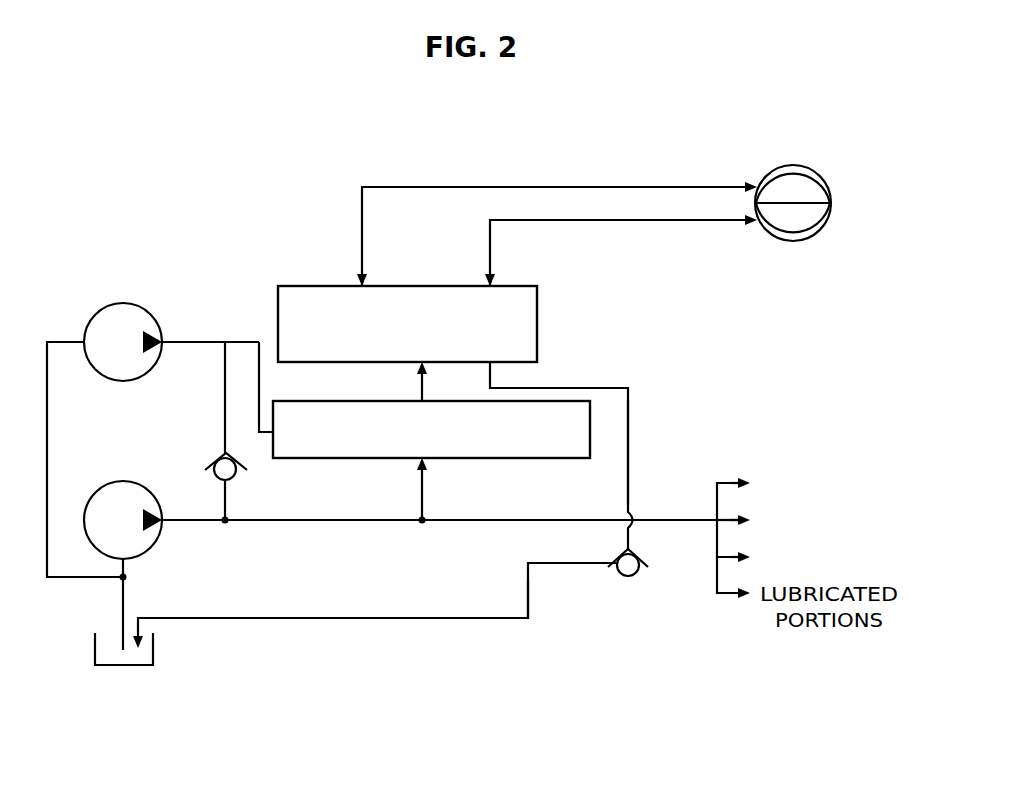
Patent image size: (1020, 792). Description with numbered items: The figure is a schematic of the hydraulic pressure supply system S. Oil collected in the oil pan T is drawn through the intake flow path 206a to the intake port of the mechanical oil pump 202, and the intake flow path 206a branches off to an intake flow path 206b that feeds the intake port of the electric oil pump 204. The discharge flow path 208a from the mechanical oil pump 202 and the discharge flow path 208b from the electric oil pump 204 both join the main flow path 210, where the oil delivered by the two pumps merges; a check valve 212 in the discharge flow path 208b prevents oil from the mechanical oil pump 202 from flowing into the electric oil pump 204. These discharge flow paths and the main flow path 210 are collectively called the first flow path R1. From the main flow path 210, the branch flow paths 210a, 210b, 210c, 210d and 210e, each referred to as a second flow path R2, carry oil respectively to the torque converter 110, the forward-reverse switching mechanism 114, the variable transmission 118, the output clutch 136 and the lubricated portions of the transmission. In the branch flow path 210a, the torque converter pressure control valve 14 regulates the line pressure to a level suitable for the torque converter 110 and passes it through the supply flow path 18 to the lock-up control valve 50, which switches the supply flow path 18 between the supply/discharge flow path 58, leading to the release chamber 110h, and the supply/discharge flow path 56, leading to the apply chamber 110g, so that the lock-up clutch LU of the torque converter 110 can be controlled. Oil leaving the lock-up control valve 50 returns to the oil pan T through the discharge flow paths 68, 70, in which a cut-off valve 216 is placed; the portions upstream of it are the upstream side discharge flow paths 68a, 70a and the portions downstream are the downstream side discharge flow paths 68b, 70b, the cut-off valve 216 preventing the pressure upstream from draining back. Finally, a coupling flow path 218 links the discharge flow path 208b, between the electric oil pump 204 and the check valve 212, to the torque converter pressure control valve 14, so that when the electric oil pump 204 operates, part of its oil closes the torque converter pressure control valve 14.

The hydraulic pressure supply system S is at (76, 156).
The mechanical oil pump 202 is at (123, 481).
The electric oil pump 204 is at (123, 303).
The intake flow path 206a is at (120, 616).
The intake flow path 206b is at (66, 338).
The discharge flow path 208a is at (182, 517).
The discharge flow path 208b is at (182, 338).
The main flow path 210 is at (294, 517).
The branch flow path 210a is at (418, 494).
The branch flow path 210b is at (722, 482).
The branch flow path 210c is at (722, 524).
The branch flow path 210d is at (722, 560).
The branch flow path 210e is at (727, 597).
The check valve 212 is at (216, 462).
The cut-off valve 216 is at (612, 580).
The coupling flow path 218 is at (258, 339).
The torque converter pressure control valve 14 is at (590, 440).
The supply flow path 18 is at (418, 386).
The lock-up control valve 50 is at (537, 343).
The supply/discharge flow path 56 is at (490, 243).
The supply/discharge flow path 58 is at (360, 238).
The discharge flow path 68 is at (484, 622).
The discharge flow path 70 is at (414, 625).
The upstream side discharge flow path 68a is at (628, 398).
The upstream side discharge flow path 70a is at (678, 447).
The downstream side discharge flow path 68b is at (336, 622).
The downstream side discharge flow path 70b is at (290, 644).
The torque converter 110 is at (853, 121).
The release chamber 110h is at (815, 182).
The apply chamber 110g is at (817, 226).
The lock-up clutch LU is at (790, 163).
The forward-reverse switching mechanism 114 is at (763, 485).
The variable transmission 118 is at (763, 520).
The output clutch 136 is at (763, 556).
The first flow path R1 is at (577, 517).
The second flow path R2 is at (432, 186).
The oil pan T is at (125, 668).